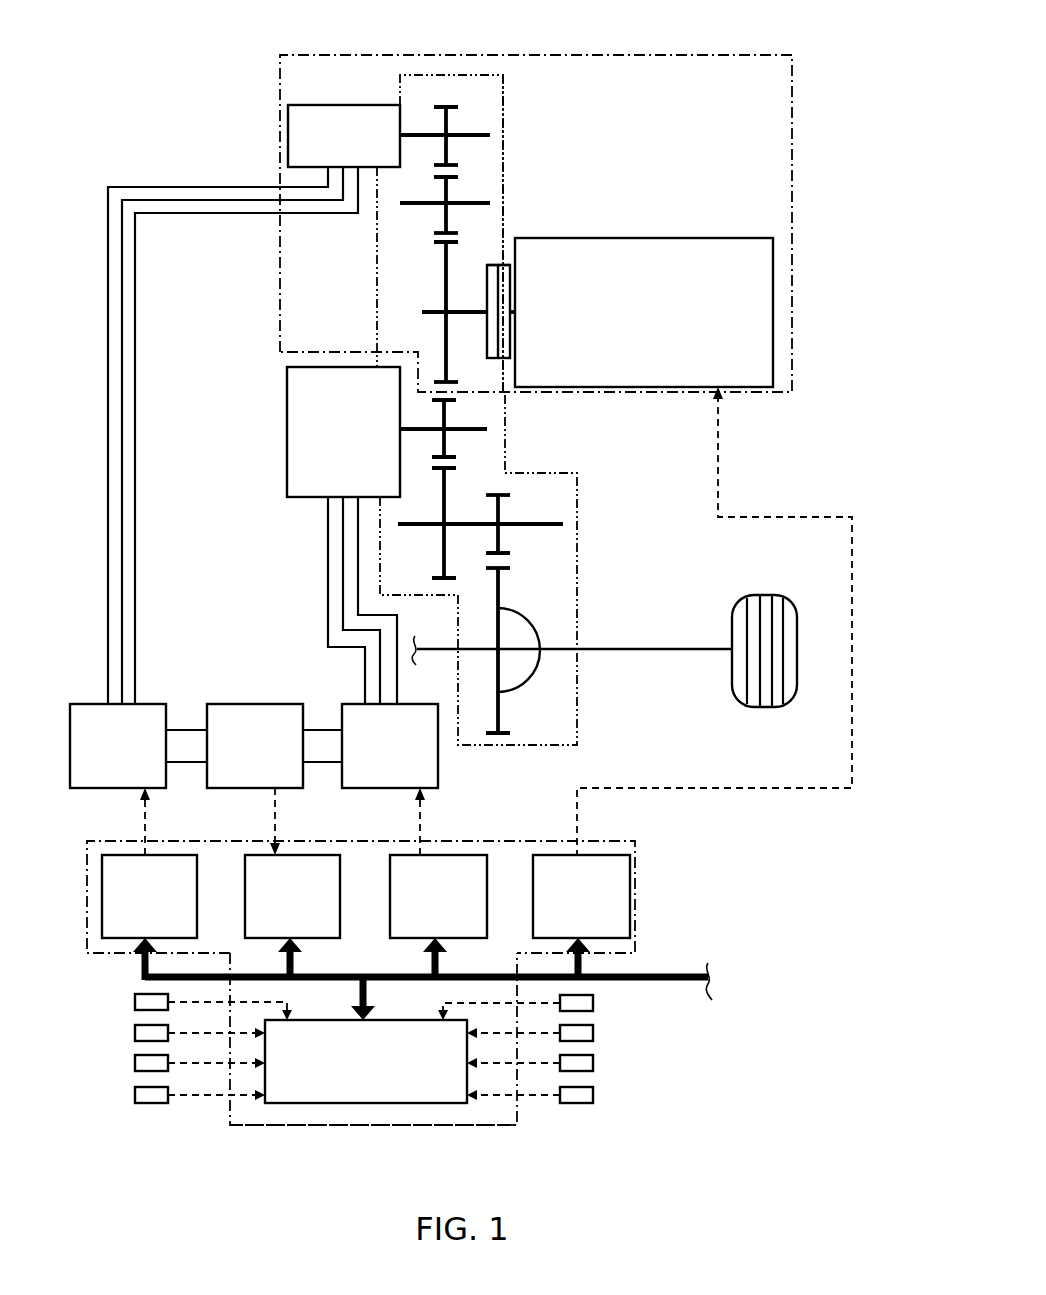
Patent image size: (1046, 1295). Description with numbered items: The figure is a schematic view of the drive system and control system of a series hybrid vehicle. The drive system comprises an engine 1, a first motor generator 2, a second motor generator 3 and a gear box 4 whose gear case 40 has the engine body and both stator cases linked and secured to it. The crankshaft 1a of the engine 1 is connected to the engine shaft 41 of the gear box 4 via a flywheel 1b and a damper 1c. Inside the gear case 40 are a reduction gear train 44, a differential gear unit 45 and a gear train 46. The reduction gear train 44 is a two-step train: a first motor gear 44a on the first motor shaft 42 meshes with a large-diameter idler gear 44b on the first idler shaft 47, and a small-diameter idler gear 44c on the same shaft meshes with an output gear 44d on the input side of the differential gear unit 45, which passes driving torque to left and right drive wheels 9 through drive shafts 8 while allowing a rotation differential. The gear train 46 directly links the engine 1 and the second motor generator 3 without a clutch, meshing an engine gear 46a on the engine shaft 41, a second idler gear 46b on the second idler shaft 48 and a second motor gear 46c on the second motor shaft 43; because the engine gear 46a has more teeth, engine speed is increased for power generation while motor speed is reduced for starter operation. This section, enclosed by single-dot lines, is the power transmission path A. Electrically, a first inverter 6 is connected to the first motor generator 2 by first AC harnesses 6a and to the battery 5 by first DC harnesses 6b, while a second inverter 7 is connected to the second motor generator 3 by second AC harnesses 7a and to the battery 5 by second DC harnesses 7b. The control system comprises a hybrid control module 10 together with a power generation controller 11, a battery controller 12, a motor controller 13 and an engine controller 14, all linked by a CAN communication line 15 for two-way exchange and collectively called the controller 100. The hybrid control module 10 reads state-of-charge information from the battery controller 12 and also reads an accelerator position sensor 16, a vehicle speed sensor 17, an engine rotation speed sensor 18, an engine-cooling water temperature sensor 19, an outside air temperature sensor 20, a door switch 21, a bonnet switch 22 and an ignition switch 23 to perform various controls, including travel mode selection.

The power transmission path A is at (716, 50).
The engine 1 is at (680, 238).
The crankshaft 1a is at (511, 310).
The flywheel 1b is at (513, 272).
The damper 1c is at (498, 262).
The first motor generator 2 is at (287, 432).
The second motor generator 3 is at (288, 124).
The gear box 4 is at (506, 187).
The battery 5 is at (250, 704).
The first inverter 6 is at (352, 704).
The first AC harnesses 6a is at (358, 540).
The first DC harnesses 6b is at (338, 764).
The second inverter 7 is at (159, 704).
The power line MG2-INV2 7a is at (135, 568).
The second DC harnesses 7b is at (196, 764).
The drive shaft 8 is at (426, 650).
The drive wheel 9 is at (766, 595).
The hybrid control module 10 is at (393, 1020).
The power generation controller 11 is at (175, 857).
The battery controller 12 is at (318, 857).
The motor controller 13 is at (465, 857).
The engine controller 14 is at (608, 857).
The CAN communication line 15 is at (625, 975).
The accelerator position sensor 16 is at (135, 1002).
The vehicle speed sensor 17 is at (135, 1033).
The engine rotation speed sensor 18 is at (135, 1063).
The engine-cooling water temperature sensor 19 is at (135, 1095).
The outside air temperature sensor 20 is at (593, 1001).
The door switch 21 is at (593, 1031).
The bonnet switch 22 is at (593, 1061).
The ignition switch 23 is at (593, 1093).
The gear case 40 is at (377, 280).
The engine shaft 41 is at (462, 312).
The first motor shaft 42 is at (413, 430).
The second motor shaft 43 is at (460, 135).
The reduction gear train 44 is at (537, 510).
The first motor gear 44a is at (445, 452).
The large-diameter idler gear 44b is at (450, 472).
The small-diameter idler gear 44c is at (503, 495).
The output gear 44d is at (488, 568).
The differential gear unit 45 is at (530, 620).
The gear train 46 is at (411, 262).
The engine gear 46a is at (449, 382).
The second idler gear 46b is at (438, 233).
The second motor gear 46c is at (438, 166).
The first idler shaft 47 is at (514, 525).
The second idler shaft 48 is at (461, 203).
The controller 100 is at (448, 1140).